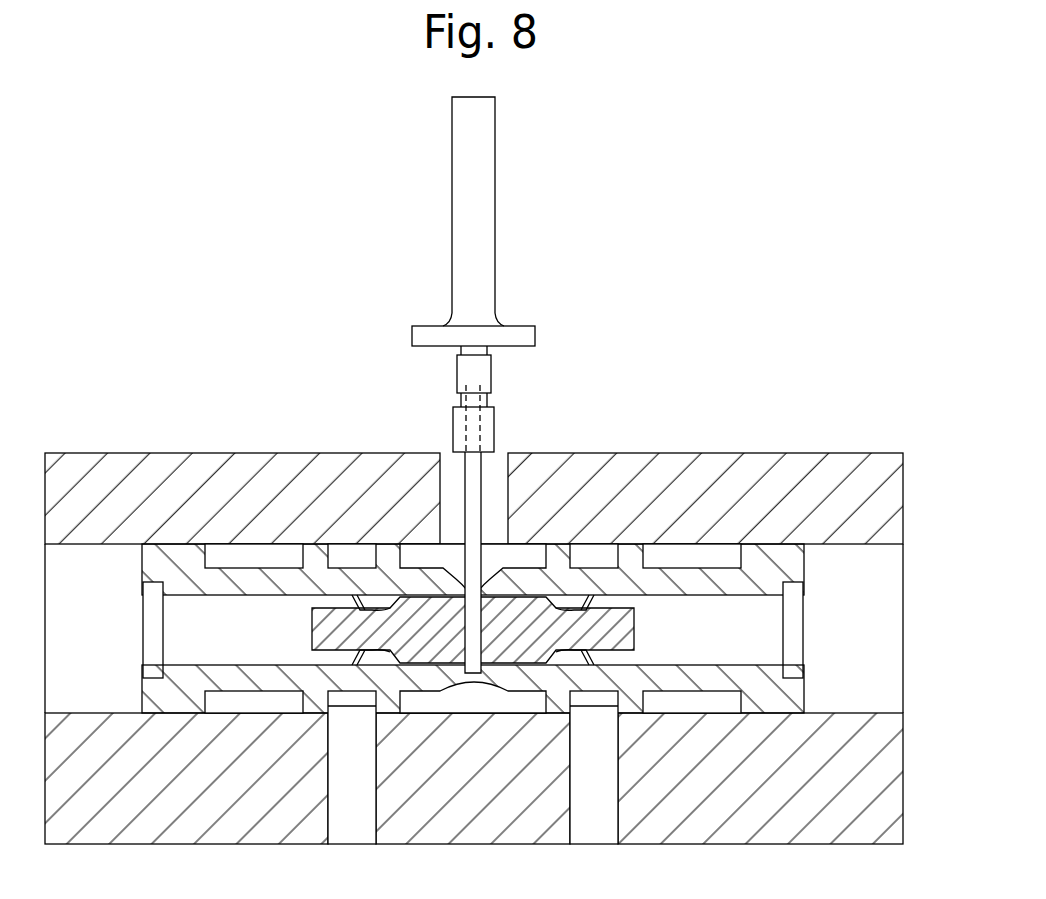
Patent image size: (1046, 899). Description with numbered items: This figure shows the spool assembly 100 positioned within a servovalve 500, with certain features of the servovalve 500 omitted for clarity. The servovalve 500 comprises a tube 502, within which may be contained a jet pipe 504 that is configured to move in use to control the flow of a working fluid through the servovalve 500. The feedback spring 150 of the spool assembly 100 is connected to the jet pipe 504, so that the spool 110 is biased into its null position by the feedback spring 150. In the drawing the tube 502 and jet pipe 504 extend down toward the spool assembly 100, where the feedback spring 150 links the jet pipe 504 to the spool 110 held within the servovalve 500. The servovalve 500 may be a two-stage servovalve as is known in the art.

The spool assembly 100 is at (836, 627).
The spool 110 is at (693, 653).
The feedback spring 150 is at (475, 480).
The servovalve 500 is at (774, 462).
The tube 502 is at (453, 181).
The jet pipe 504 is at (457, 380).